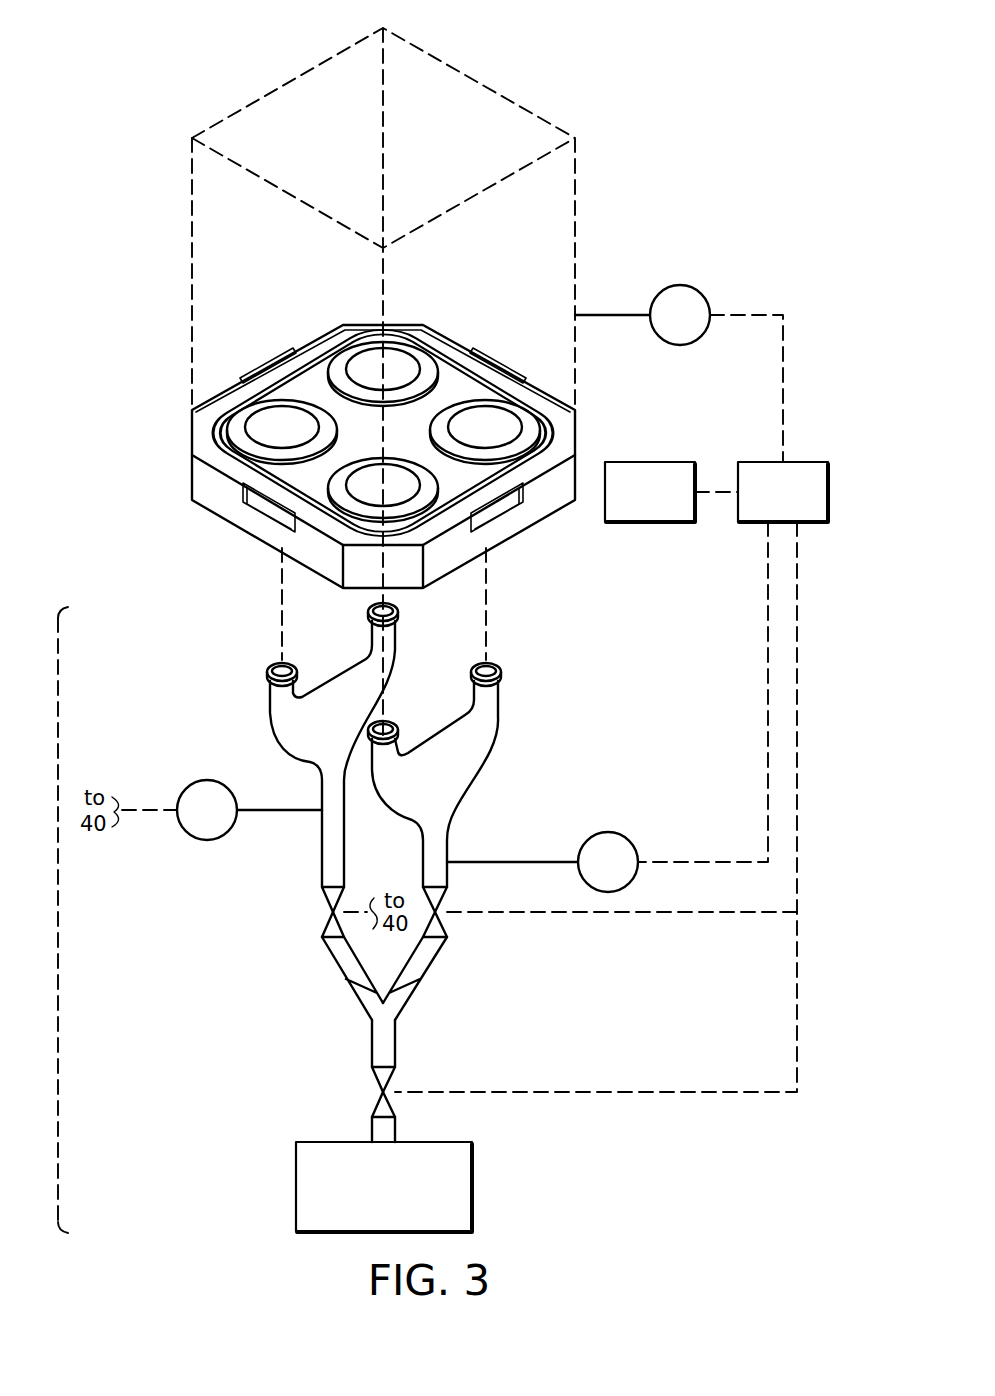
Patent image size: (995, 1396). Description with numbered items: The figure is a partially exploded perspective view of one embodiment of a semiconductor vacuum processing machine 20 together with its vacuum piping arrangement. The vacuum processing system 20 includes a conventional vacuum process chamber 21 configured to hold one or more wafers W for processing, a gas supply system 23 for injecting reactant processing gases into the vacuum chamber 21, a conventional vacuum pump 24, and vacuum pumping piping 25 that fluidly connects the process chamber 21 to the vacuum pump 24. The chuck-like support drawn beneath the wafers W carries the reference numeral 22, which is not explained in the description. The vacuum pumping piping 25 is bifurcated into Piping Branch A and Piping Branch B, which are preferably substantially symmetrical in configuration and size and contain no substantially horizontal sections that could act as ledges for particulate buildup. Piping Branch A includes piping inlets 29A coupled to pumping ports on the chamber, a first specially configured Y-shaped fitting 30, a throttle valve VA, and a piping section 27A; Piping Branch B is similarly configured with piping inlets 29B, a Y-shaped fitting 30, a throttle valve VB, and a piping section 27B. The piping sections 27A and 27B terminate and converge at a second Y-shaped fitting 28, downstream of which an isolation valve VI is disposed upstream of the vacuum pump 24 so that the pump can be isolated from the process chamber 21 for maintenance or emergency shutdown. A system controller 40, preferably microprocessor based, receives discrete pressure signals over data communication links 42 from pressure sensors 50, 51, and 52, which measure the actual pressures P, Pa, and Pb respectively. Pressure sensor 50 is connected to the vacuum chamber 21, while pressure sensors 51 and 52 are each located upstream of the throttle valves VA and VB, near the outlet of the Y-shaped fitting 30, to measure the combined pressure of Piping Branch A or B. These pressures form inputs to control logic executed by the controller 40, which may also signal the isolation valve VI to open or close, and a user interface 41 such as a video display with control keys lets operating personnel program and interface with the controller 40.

The semiconductor vacuum processing machine 20 is at (221, 60).
The vacuum process chamber 21 is at (608, 197).
The substrate holder 22 is at (463, 387).
The gas supply system 23 is at (191, 297).
The vacuum pump 24 is at (367, 1202).
The vacuum pumping piping 25 is at (37, 920).
The piping section 27A is at (345, 980).
The piping section 27B is at (430, 980).
The Y-shaped fitting 28 is at (383, 1042).
The piping inlets 29A is at (280, 663).
The piping inlets 29B is at (488, 663).
The Y-shaped fitting 30 is at (480, 793).
The system controller 40 is at (767, 509).
The user interface 41 is at (634, 509).
The data communication links 42 is at (783, 390).
The pressure sensor 50 is at (679, 285).
The pressure sensor 51 is at (204, 841).
The pressure sensor 52 is at (608, 832).
The wafers W is at (263, 428).
The Piping Branch A is at (325, 956).
The Piping Branch B is at (442, 956).
The throttle valve VA is at (322, 902).
The throttle valve VB is at (447, 922).
The isolation valve VI is at (370, 1090).